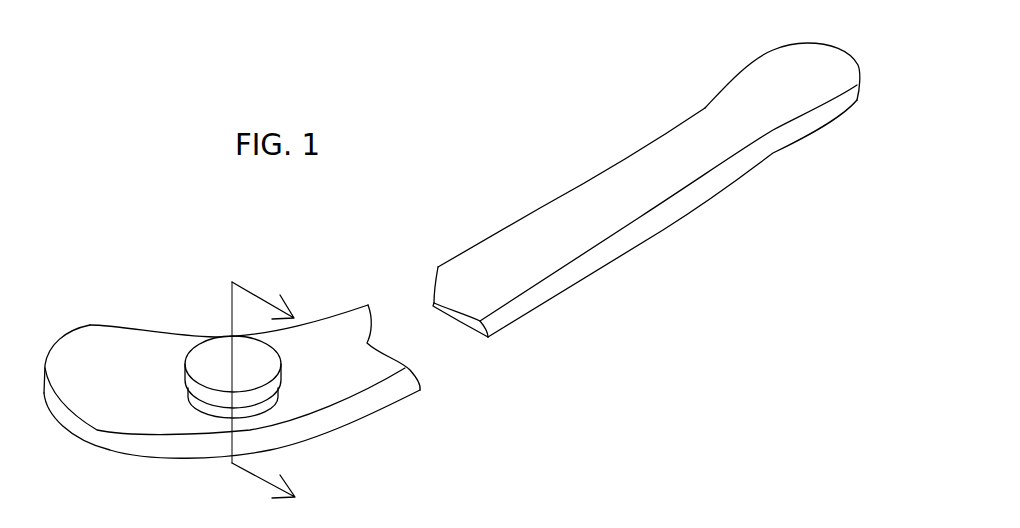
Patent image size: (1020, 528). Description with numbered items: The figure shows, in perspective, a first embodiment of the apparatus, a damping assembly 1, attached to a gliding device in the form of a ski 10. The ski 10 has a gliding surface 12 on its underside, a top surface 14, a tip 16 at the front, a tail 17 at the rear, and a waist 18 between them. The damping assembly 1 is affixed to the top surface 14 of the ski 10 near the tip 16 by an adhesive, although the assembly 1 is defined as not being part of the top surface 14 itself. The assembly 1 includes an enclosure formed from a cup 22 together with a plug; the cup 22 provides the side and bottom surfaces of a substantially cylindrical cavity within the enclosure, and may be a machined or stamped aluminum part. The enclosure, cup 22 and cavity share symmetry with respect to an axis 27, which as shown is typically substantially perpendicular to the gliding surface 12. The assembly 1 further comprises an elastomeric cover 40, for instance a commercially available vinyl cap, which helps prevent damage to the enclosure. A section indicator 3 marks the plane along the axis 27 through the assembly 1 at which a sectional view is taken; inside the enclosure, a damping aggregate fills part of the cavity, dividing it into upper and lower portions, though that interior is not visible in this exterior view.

The damping assembly 1 is at (290, 387).
The section line of FIG. 3 is at (263, 379).
The ski 10 is at (493, 268).
The gliding surface 12 is at (472, 337).
The top surface 14 is at (681, 182).
The tip 16 is at (135, 346).
The tail 17 is at (748, 95).
The waist 18 is at (543, 297).
The cup 22 is at (257, 412).
The axis 27 is at (229, 297).
The elastomeric cover 40 is at (218, 349).